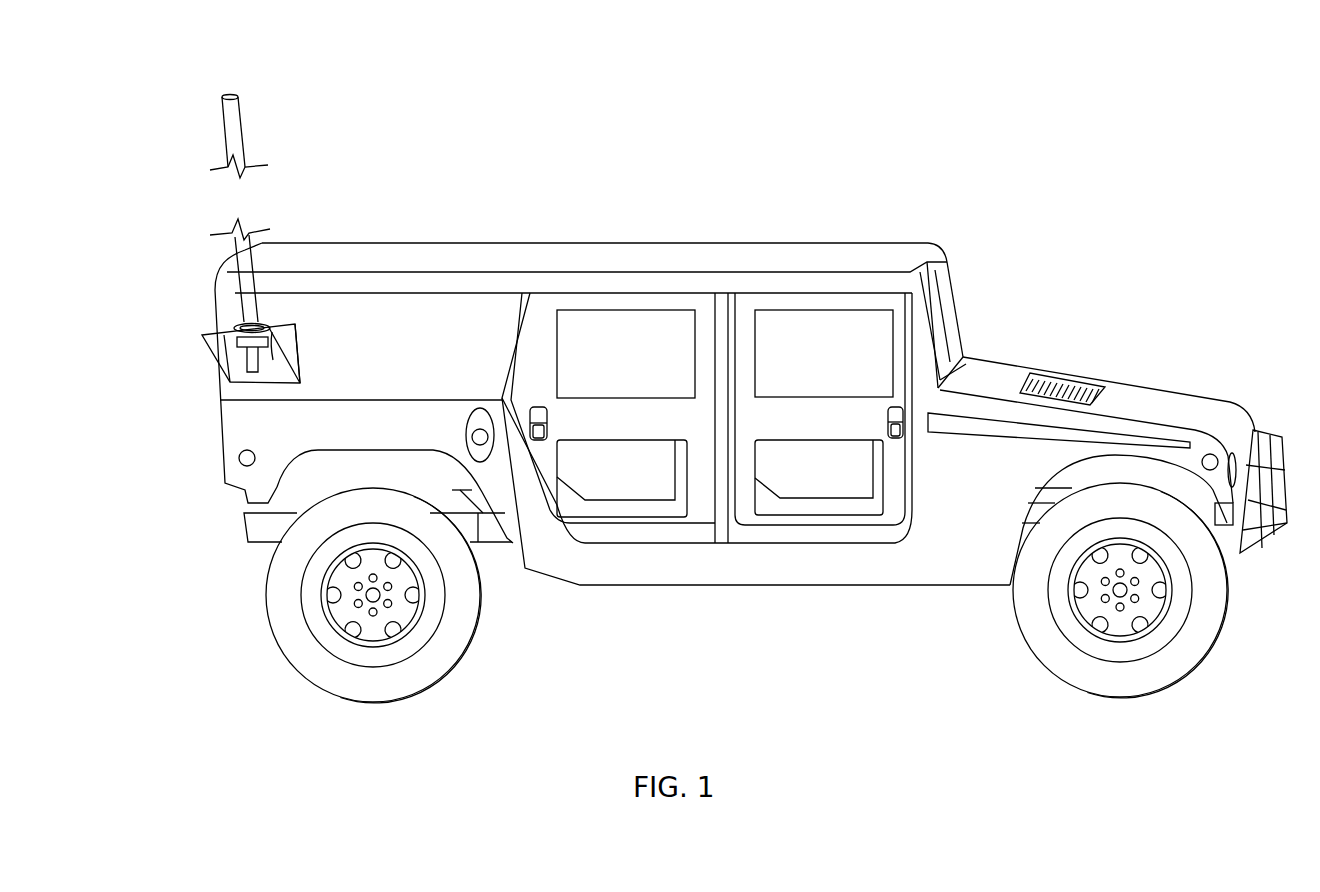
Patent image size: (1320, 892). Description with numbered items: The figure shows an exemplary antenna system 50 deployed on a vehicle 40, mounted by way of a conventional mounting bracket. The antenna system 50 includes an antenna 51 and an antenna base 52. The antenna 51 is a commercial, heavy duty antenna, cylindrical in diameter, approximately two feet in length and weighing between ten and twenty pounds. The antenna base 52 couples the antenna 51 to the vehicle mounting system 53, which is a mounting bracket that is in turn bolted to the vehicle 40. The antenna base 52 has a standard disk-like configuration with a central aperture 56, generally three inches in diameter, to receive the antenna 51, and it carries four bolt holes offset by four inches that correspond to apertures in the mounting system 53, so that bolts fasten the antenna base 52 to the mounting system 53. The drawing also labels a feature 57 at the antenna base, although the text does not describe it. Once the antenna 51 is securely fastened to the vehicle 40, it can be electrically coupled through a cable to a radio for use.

The vehicle 40 is at (744, 600).
The antenna system 50 is at (184, 72).
The antenna 51 is at (226, 138).
The antenna base 52 is at (296, 330).
The vehicle mounting system 53 is at (297, 357).
The central aperture 56 is at (272, 332).
The mounting ring / washer 57 is at (232, 324).